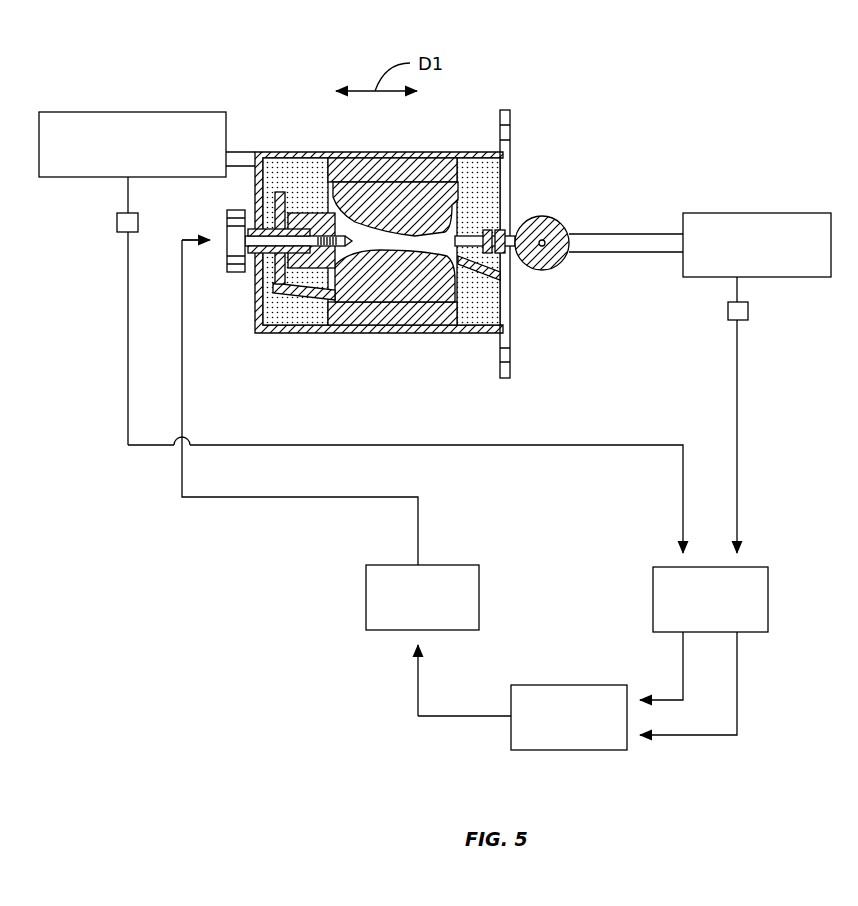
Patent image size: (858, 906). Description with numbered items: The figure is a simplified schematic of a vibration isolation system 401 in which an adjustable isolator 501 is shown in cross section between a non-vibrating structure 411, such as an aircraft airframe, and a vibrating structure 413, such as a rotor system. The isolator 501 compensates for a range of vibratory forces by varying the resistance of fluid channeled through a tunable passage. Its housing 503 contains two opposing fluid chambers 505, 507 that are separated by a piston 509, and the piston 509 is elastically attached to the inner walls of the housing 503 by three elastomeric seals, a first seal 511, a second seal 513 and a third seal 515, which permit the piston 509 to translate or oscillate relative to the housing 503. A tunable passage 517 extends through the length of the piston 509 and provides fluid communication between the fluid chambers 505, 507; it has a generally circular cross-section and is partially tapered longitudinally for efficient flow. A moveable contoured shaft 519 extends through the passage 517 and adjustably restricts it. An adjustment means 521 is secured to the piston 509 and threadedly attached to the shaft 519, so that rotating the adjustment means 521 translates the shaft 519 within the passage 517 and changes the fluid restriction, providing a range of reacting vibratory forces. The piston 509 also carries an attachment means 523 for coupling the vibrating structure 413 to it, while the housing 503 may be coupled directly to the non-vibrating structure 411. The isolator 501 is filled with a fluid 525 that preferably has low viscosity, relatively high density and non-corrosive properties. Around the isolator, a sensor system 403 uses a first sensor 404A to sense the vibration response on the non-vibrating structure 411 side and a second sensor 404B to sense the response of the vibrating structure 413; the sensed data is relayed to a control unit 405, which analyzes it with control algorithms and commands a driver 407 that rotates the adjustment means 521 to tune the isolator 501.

The vibration isolation system 401 is at (718, 78).
The sensor system 403 is at (768, 582).
The first sensor 404A is at (117, 226).
The second sensor 404B is at (748, 311).
The control unit 405 is at (578, 750).
The driver 407 is at (366, 600).
The non-vibrating structure 411 is at (140, 112).
The vibrating structure 413 is at (745, 213).
The adjustable isolator 501 is at (393, 209).
The housing 503 is at (385, 165).
The first fluid chamber 505 is at (288, 318).
The second fluid chamber 507 is at (485, 310).
The piston 509 is at (405, 305).
The first seal 511 is at (352, 305).
The second seal 513 is at (252, 217).
The third seal 515 is at (508, 258).
The tunable passage 517 is at (372, 224).
The contoured shaft 519 is at (303, 208).
The adjustment means 521 is at (228, 222).
The attachment means 523 is at (563, 222).
The fluid 525 is at (480, 185).